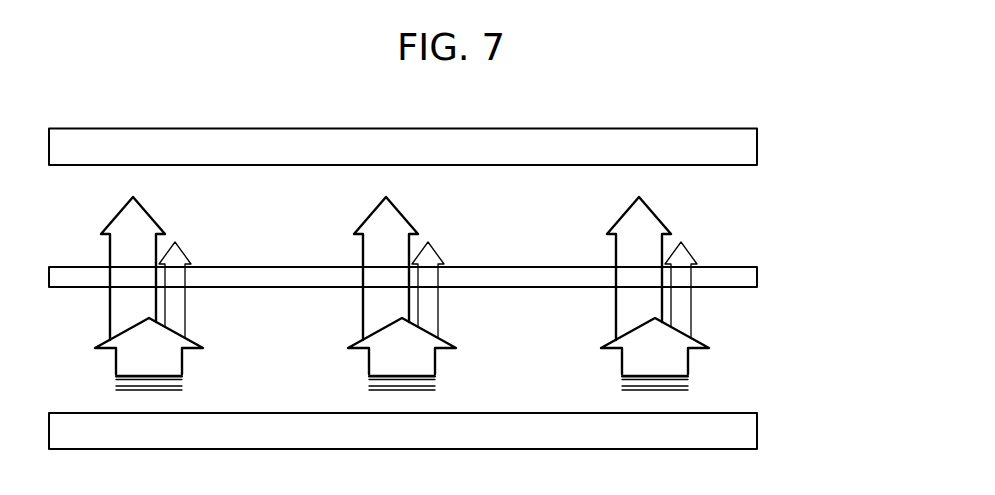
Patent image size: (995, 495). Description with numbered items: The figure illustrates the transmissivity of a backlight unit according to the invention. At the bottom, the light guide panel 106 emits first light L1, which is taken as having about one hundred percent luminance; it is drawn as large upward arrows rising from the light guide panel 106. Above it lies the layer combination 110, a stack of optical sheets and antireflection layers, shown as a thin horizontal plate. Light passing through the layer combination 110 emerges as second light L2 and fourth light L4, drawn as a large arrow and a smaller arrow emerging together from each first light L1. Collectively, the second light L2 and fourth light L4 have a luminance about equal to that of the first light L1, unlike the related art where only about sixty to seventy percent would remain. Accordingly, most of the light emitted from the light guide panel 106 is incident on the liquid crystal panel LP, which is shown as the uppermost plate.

The liquid crystal panel LP is at (757, 148).
The layer combination 110 is at (757, 281).
The light guide panel 106 is at (757, 435).
The second light L2 is at (120, 252).
The fourth light L4 is at (177, 306).
The first light L1 is at (172, 362).